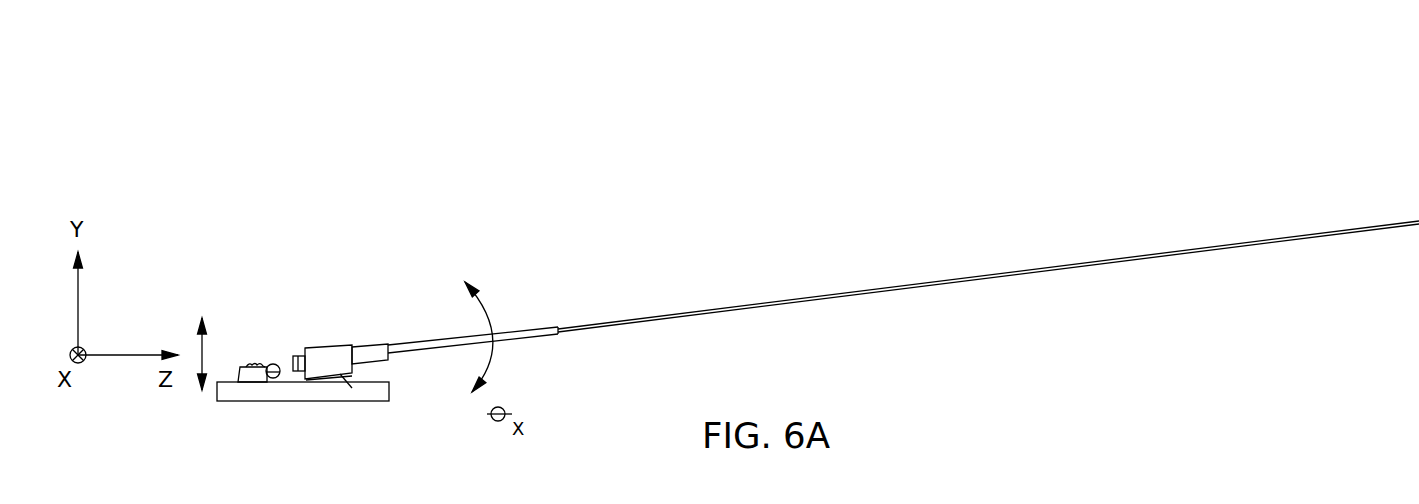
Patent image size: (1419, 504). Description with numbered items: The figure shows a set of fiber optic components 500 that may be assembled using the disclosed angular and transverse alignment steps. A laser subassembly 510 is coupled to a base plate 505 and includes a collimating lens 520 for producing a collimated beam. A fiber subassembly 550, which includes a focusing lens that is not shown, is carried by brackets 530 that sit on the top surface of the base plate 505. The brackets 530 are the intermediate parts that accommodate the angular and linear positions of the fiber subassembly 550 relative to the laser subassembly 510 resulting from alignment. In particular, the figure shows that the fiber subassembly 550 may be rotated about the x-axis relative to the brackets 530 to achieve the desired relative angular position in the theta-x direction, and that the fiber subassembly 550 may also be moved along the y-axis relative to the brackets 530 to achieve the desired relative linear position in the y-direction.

The set of fiber optic components 500 is at (350, 158).
The base plate 505 is at (257, 401).
The laser subassembly 510 is at (239, 366).
The collimating lens 520 is at (273, 363).
The brackets 530 is at (352, 388).
The fiber subassembly 550 is at (348, 347).